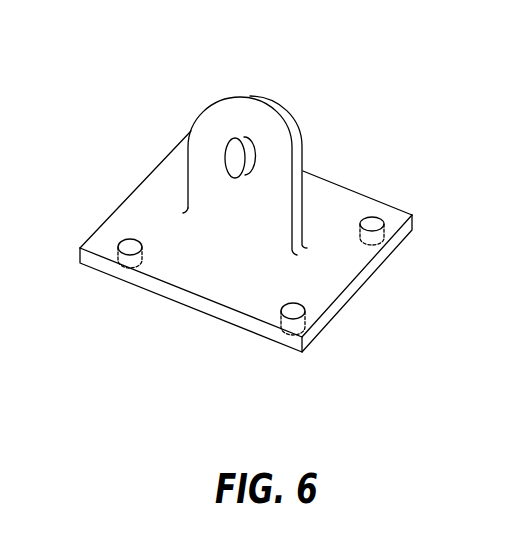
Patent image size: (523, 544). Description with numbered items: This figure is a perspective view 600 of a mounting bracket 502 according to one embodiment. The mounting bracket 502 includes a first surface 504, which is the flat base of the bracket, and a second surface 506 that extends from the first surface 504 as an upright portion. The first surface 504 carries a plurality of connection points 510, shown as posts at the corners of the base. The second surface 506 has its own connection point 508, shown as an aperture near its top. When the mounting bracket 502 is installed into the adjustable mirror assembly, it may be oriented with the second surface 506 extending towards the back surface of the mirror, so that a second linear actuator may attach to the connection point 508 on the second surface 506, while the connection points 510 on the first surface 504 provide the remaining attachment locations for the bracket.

The perspective view 600 is at (152, 85).
The mounting bracket 502 is at (142, 202).
The first surface 504 is at (342, 203).
The second surface 506 is at (303, 155).
The connection point 508 is at (247, 155).
The connection points 510 is at (130, 246).